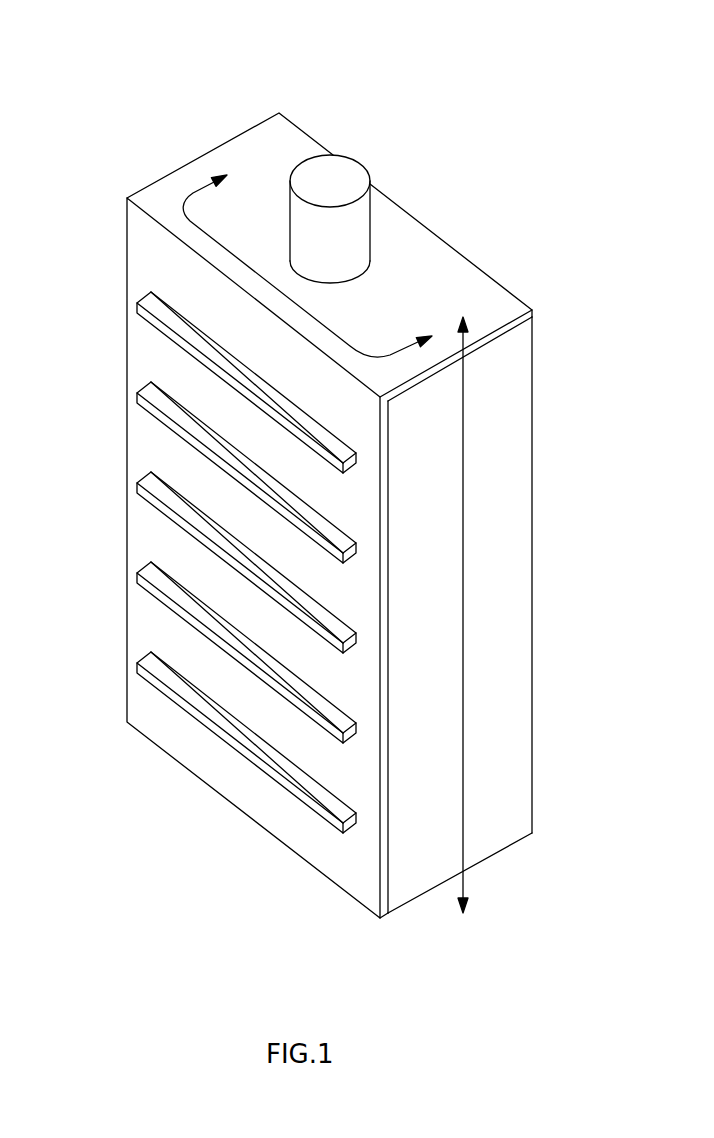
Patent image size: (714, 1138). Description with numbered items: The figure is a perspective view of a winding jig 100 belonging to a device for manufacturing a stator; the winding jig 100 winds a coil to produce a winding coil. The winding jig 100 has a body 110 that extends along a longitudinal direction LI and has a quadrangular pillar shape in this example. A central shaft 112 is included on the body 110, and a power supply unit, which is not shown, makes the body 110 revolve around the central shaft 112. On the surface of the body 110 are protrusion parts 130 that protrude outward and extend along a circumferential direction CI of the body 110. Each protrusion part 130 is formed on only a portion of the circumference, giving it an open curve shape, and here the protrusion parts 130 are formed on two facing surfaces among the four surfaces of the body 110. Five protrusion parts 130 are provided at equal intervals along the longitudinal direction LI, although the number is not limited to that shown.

The winding jig 100 is at (147, 28).
The body 110 is at (436, 192).
The central shaft 112 is at (335, 167).
The protrusion part 130 is at (168, 318).
The circumferential direction CI is at (196, 189).
The longitudinal direction LI is at (463, 615).